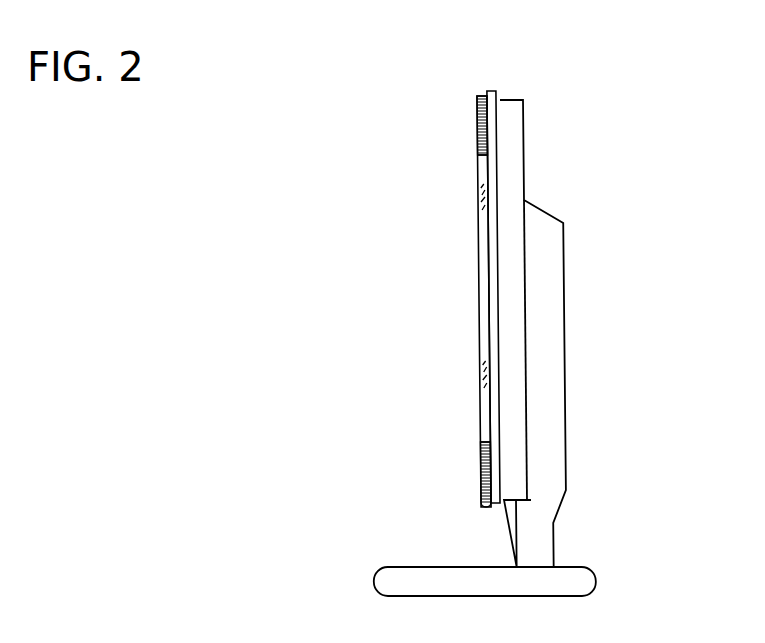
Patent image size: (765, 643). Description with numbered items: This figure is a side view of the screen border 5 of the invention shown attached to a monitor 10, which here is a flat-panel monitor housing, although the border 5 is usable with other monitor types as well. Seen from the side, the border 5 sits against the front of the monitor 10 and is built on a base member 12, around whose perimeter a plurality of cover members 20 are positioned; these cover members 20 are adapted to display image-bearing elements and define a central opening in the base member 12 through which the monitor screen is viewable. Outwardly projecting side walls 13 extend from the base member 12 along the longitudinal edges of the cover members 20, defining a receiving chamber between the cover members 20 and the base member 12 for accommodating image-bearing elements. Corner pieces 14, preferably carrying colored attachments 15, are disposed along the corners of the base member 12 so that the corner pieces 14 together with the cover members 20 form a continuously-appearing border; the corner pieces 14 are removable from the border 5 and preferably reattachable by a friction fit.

The screen border 5 is at (493, 80).
The monitor 10 is at (562, 340).
The base member 12 is at (493, 190).
The side walls 13 is at (493, 320).
The corner pieces 14 is at (490, 128).
The colored attachments 15 is at (487, 154).
The cover members 20 is at (479, 290).